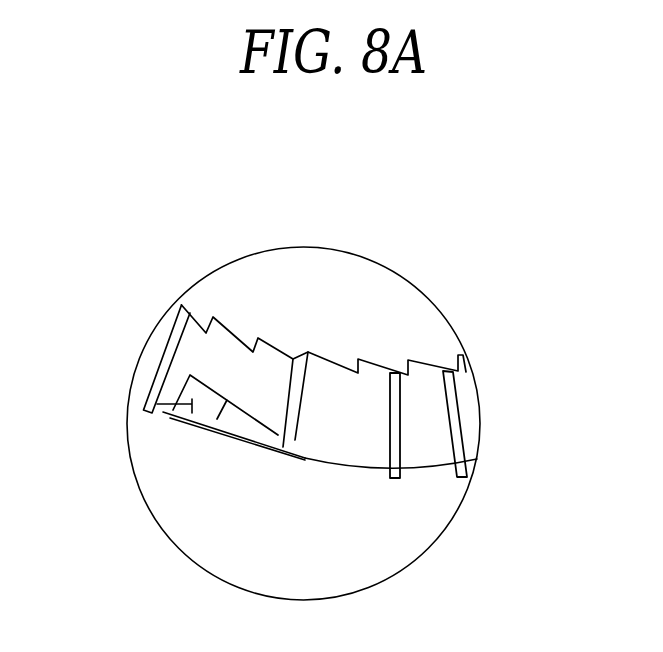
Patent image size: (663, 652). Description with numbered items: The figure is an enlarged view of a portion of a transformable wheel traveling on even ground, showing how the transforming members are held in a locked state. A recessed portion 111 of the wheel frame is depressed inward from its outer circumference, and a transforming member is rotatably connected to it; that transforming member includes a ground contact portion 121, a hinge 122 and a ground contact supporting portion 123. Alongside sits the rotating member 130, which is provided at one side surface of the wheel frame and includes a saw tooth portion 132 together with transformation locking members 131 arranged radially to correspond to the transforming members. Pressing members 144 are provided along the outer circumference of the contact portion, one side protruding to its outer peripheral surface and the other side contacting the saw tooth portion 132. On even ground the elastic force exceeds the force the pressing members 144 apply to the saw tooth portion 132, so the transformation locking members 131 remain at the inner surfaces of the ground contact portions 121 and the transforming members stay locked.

The recessed portion 111 is at (149, 396).
The ground contact portion 121 is at (194, 425).
The hinge 122 is at (305, 458).
The ground contact supporting portion 123 is at (215, 424).
The rotating member 130 is at (382, 303).
The transformation locking member 131 is at (296, 383).
The saw tooth portion 132 is at (430, 364).
The pressing member 144 is at (457, 440).